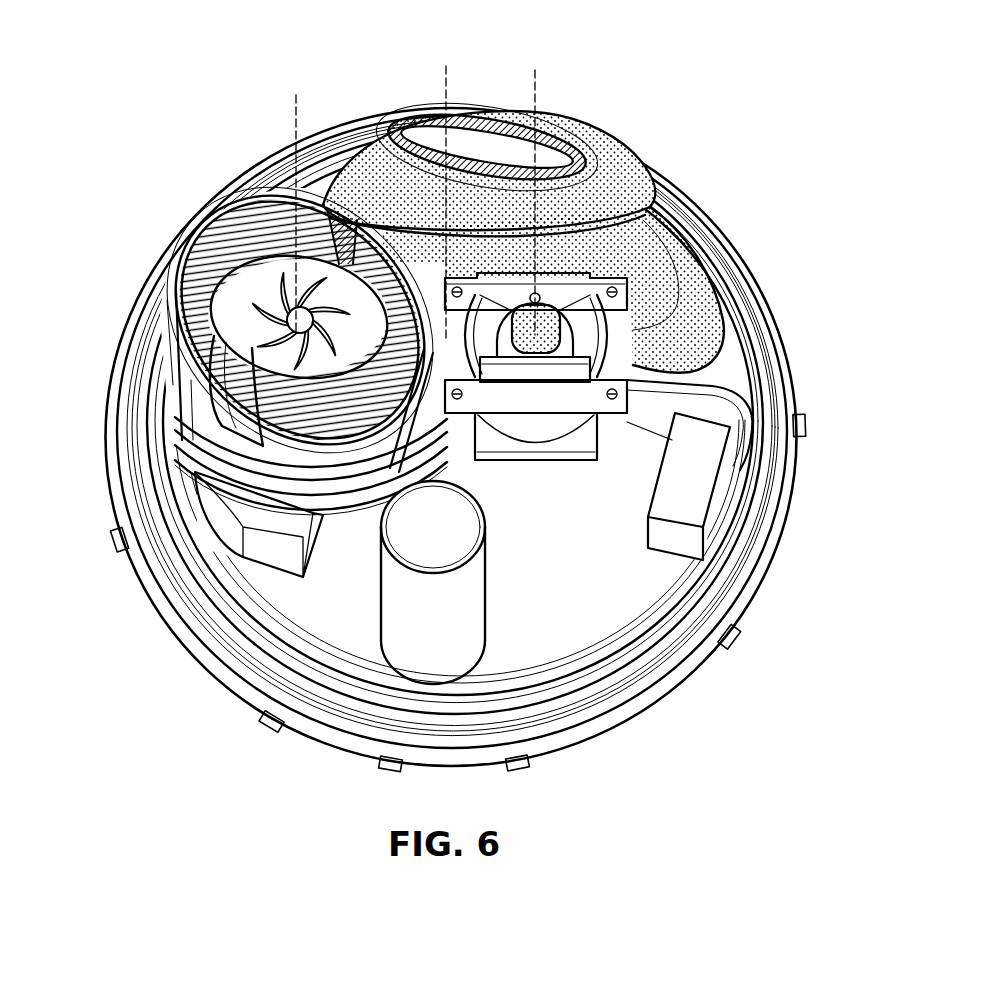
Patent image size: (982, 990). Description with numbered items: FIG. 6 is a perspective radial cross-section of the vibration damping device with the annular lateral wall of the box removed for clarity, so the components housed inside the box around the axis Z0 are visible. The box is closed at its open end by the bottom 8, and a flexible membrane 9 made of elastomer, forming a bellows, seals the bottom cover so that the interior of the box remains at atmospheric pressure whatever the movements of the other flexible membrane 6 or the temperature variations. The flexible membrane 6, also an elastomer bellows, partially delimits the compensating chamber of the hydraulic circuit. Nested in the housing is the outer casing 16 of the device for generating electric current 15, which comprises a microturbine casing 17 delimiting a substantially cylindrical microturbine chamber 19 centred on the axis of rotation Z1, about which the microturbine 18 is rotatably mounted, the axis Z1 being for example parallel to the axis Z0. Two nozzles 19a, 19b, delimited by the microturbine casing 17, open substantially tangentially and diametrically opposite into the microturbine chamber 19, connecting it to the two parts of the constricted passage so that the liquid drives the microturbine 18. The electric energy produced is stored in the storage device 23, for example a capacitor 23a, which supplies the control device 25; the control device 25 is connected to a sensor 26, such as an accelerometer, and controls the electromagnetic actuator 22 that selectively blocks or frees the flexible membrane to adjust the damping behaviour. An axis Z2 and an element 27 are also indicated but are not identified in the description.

The flexible membrane 6 is at (583, 140).
The bottom 8 is at (663, 562).
The flexible membrane 9 is at (655, 303).
The device for generating electric current 15 is at (170, 352).
The outer casing 16 is at (184, 298).
The microturbine casing 17 is at (205, 247).
The microturbine 18 is at (233, 290).
The microturbine chamber 19 is at (204, 320).
The nozzle 19a is at (233, 388).
The nozzle 19b is at (352, 270).
The electromagnetic actuator 22 is at (620, 336).
The device for storing electrical energy 23 is at (545, 652).
The capacitor 23a is at (432, 528).
The control device 25 is at (273, 548).
The sensor 26 is at (717, 477).
The base 27 is at (508, 640).
The axis Z0 is at (441, 81).
The axis of rotation Z1 is at (292, 112).
The motor axis Z2 is at (530, 87).